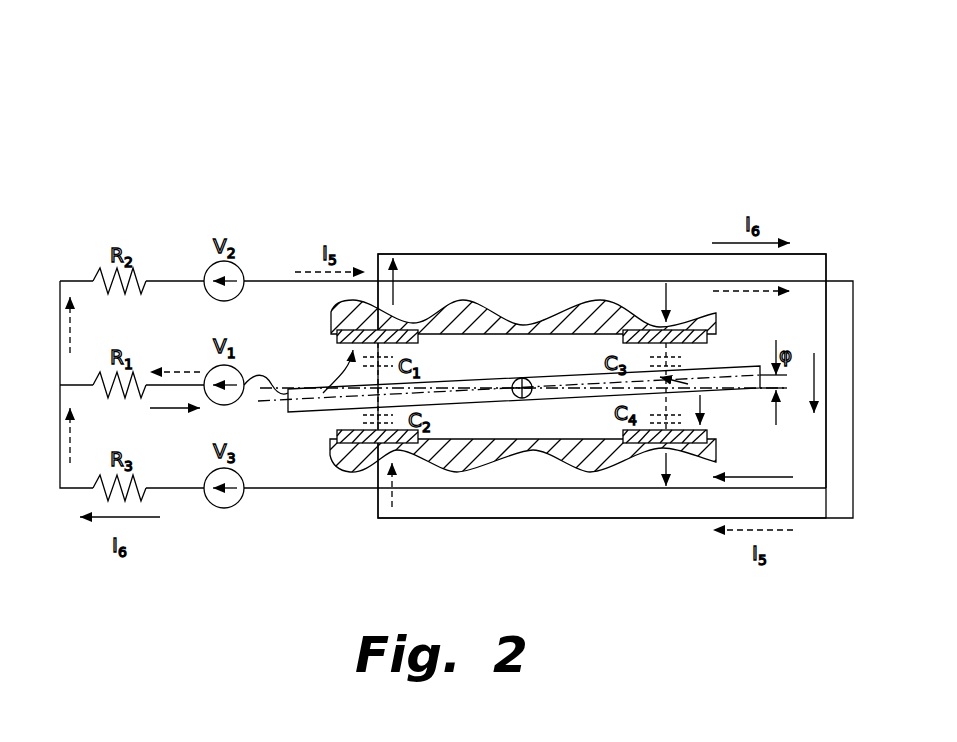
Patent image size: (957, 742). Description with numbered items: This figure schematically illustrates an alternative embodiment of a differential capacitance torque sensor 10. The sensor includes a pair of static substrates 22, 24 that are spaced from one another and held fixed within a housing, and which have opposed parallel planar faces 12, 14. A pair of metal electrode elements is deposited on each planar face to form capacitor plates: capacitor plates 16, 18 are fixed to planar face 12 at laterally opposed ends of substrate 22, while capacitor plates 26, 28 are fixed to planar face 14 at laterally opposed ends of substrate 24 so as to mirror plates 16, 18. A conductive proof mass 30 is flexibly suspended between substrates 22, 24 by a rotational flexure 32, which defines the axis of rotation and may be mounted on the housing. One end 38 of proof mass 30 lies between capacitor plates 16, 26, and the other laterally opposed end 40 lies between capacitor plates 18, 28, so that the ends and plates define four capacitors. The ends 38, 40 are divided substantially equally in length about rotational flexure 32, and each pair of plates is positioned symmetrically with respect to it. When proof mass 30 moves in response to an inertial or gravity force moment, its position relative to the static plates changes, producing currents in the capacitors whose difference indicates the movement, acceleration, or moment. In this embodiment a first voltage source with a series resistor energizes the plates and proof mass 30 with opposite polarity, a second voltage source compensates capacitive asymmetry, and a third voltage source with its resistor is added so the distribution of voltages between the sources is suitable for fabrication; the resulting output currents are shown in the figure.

The differential capacitance torque sensor 10 is at (463, 118).
The planar face 12 is at (503, 383).
The planar face 14 is at (457, 472).
The capacitor plate 16 is at (337, 338).
The capacitor plate 18 is at (623, 337).
The static substrate 22 is at (333, 307).
The static substrate 24 is at (352, 472).
The capacitor plate 26 is at (338, 433).
The capacitor plate 28 is at (623, 432).
The proof mass 30 is at (730, 391).
The rotational flexure 32 is at (457, 323).
The end of proof mass 38 is at (330, 371).
The end of proof mass 40 is at (722, 354).